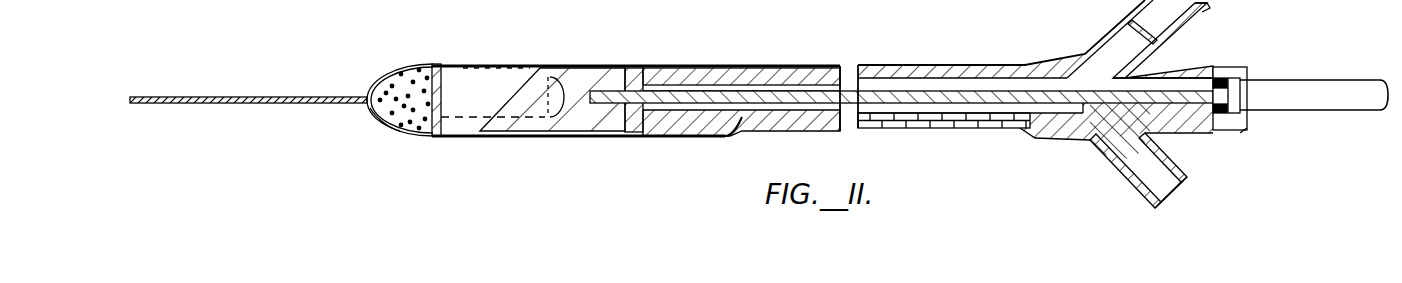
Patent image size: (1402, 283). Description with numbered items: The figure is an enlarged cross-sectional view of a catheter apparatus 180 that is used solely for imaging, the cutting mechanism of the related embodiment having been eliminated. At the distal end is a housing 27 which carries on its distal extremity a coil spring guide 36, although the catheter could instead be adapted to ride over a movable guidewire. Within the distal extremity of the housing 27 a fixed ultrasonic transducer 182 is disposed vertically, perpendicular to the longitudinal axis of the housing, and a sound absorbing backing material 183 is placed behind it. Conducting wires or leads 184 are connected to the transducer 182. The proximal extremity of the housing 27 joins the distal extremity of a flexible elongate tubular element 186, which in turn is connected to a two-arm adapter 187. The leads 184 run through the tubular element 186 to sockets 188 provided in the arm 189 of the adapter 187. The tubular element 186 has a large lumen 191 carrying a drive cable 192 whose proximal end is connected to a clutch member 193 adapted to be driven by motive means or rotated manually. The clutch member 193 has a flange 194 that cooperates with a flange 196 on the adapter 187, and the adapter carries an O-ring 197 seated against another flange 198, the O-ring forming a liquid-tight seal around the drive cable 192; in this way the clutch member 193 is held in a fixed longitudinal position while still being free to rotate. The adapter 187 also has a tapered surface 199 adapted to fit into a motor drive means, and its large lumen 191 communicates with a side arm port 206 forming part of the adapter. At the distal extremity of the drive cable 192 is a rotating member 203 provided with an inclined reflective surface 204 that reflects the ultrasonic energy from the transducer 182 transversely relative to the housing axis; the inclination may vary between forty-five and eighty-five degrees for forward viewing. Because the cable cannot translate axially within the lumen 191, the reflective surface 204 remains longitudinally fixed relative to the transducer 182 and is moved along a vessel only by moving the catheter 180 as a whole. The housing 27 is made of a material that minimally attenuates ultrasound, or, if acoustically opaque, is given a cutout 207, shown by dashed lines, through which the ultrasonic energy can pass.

The coil spring guide 36 is at (200, 97).
The sound absorbing backing material 183 is at (396, 80).
The housing 27 is at (378, 114).
The ultrasonic transducer 182 is at (446, 49).
The conducting wires or leads 184 is at (465, 137).
The cutout 207 is at (463, 66).
The inclined reflective surface 204 is at (516, 87).
The rotating member 203 is at (587, 133).
The large lumen 191 is at (676, 82).
The drive cable 192 is at (783, 97).
The catheter apparatus 180 is at (834, 52).
The flexible elongate tubular element 186 is at (948, 72).
The two-arm adapter 187 is at (1071, 52).
The side arm port 206 is at (1196, 8).
The flange 198 is at (1098, 140).
The arm 189 is at (1164, 148).
The sockets 188 is at (1175, 205).
The flange 194 is at (1240, 76).
The O-ring 197 is at (1218, 78).
The flange 196 is at (1238, 100).
The clutch member 193 is at (1337, 104).
The tapered surface 199 is at (1242, 128).